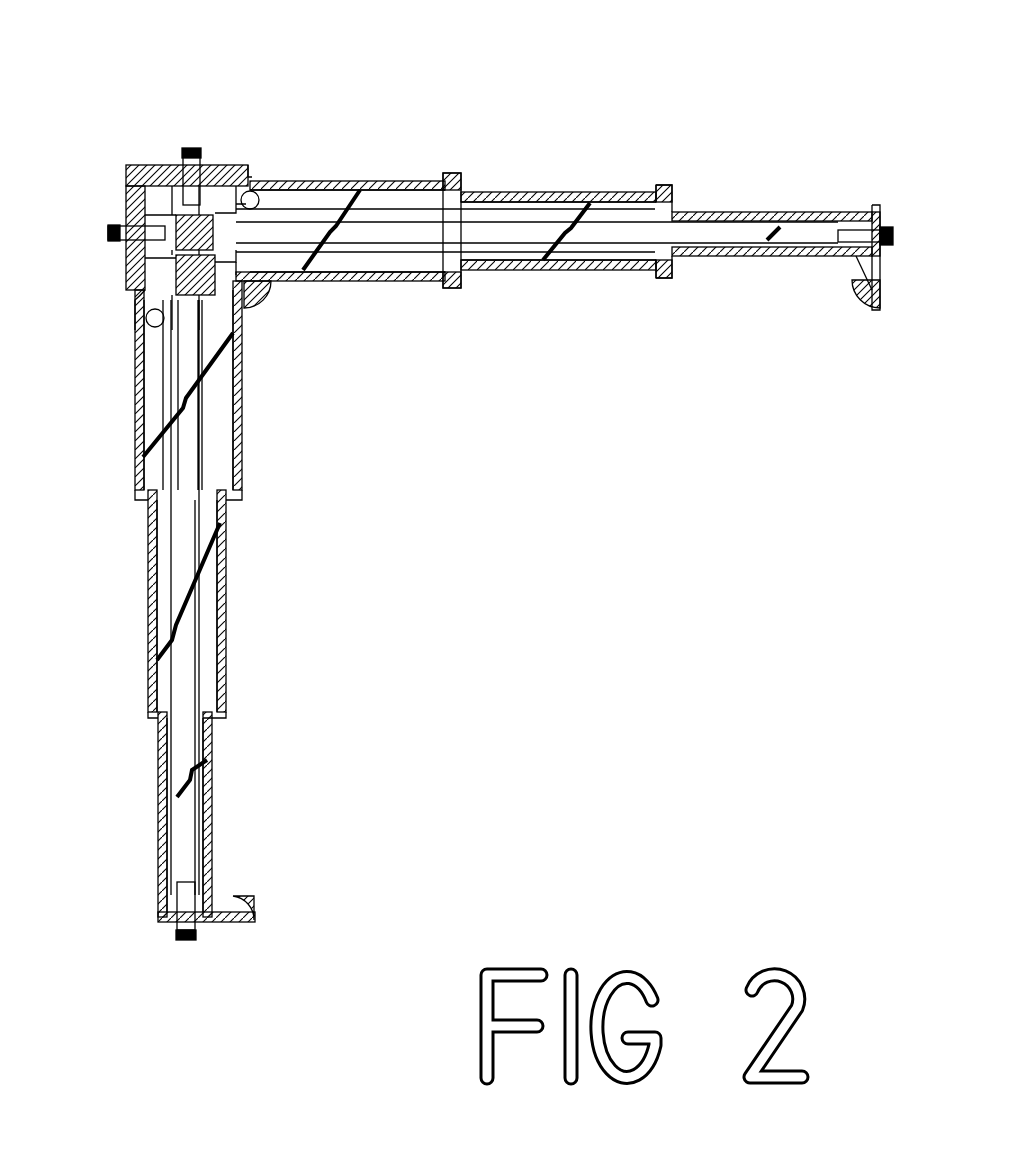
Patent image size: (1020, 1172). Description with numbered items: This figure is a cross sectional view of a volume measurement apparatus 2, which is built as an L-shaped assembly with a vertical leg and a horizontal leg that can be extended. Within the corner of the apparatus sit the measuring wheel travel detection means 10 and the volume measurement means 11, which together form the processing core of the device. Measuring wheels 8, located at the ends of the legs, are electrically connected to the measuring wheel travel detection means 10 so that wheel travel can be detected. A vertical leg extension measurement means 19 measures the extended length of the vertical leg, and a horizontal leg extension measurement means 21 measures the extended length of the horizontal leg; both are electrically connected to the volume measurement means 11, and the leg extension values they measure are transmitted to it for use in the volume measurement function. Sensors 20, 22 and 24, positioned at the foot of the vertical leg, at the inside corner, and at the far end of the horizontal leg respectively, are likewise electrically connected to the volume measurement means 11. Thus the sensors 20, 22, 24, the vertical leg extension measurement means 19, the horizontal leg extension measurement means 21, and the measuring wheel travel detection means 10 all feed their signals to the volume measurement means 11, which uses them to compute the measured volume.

The volume measurement apparatus 2 is at (650, 80).
The measuring wheels 8 is at (190, 150).
The measuring wheel travel detection means 10 is at (212, 205).
The volume measurement means 11 is at (176, 264).
The vertical leg extension measurement means 19 is at (152, 326).
The sensor 20 is at (256, 902).
The horizontal leg extension measurement means 21 is at (262, 192).
The sensor 22 is at (262, 300).
The sensor 24 is at (856, 305).